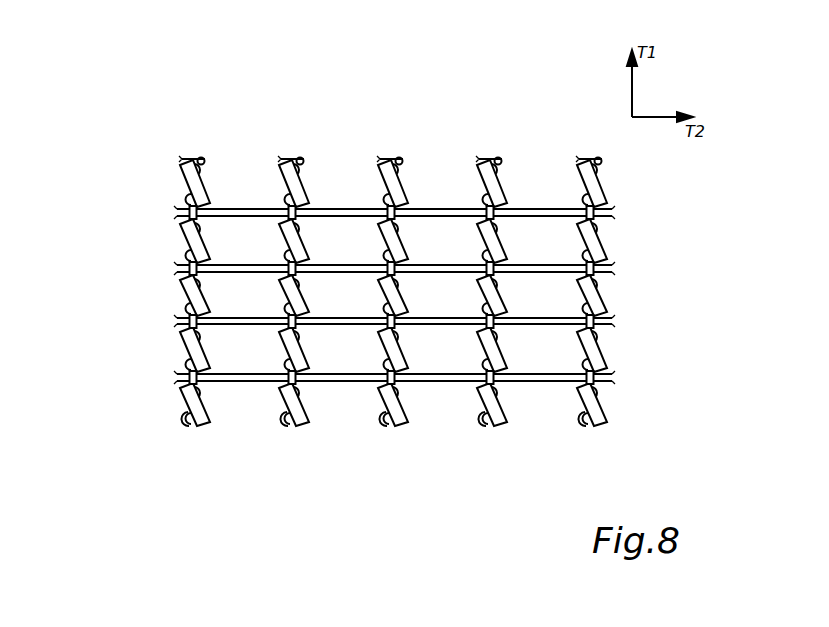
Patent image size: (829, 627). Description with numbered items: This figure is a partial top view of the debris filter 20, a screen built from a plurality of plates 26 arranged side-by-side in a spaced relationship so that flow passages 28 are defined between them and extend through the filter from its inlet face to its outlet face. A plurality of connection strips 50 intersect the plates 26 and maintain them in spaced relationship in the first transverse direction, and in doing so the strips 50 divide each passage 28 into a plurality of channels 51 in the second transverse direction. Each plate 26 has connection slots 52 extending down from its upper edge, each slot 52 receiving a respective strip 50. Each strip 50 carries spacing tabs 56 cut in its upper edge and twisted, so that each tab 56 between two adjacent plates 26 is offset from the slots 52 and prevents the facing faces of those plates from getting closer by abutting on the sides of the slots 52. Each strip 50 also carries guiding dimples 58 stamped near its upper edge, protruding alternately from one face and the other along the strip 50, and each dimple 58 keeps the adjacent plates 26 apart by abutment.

The debris filter 20 is at (149, 331).
The plates 26 is at (614, 377).
The flow passages 28 is at (607, 401).
The connection strips 50 is at (590, 158).
The channels 51 is at (257, 241).
The connection slots 52 is at (381, 329).
The spacing tabs 56 is at (323, 210).
The guiding dimples 58 is at (181, 208).